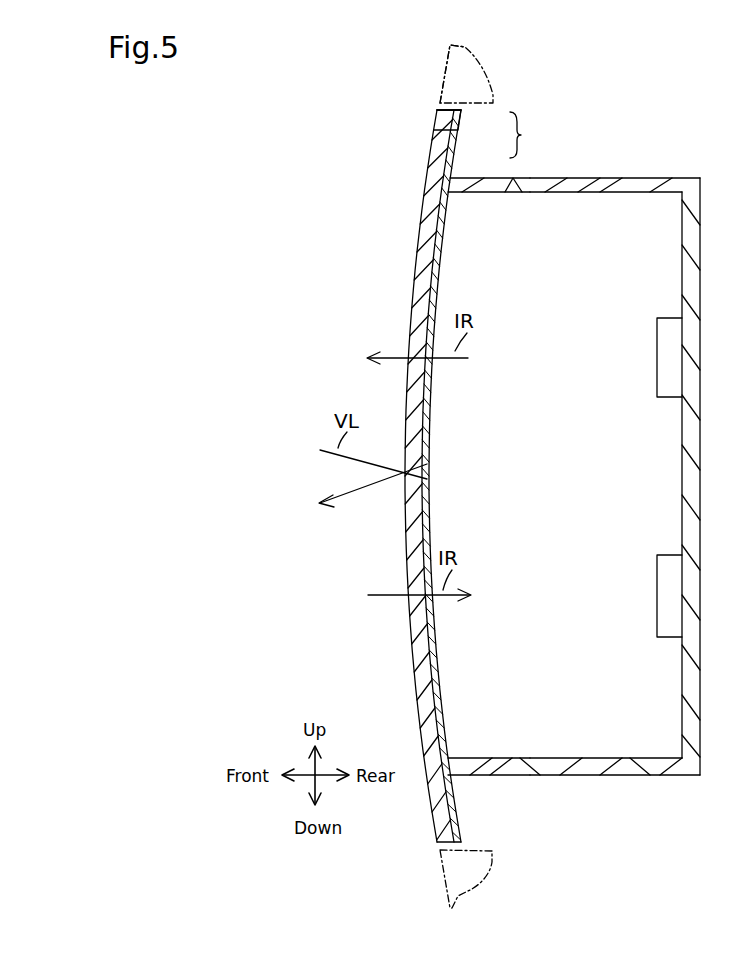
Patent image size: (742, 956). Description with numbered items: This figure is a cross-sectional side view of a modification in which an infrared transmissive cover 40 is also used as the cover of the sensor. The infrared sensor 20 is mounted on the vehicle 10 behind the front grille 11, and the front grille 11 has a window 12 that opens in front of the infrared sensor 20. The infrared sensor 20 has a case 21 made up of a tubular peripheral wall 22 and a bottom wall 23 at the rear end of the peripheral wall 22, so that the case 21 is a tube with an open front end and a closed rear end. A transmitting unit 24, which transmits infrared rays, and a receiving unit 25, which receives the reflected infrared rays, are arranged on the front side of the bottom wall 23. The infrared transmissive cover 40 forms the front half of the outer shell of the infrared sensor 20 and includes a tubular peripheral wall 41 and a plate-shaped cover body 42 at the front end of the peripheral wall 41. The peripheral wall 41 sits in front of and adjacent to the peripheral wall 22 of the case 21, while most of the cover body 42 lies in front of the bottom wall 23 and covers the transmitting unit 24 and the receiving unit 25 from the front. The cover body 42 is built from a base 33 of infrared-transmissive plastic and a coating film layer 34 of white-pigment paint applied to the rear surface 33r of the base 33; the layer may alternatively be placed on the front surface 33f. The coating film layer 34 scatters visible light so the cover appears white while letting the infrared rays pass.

The vehicle 10 is at (573, 104).
The front grille 11 is at (448, 52).
The window 12 is at (437, 118).
The infrared sensor 20 is at (628, 484).
The case 21 is at (628, 438).
The peripheral wall 22 is at (645, 185).
The bottom wall 23 is at (701, 457).
The transmitting unit 24 is at (657, 352).
The receiving unit 25 is at (657, 588).
The base 33 is at (418, 476).
The front surface 33f is at (413, 293).
The rear surface 33r is at (432, 291).
The coating film layer 34 is at (432, 422).
The infrared transmissive cover 40 is at (491, 465).
The peripheral wall 41 is at (497, 186).
The cover body 42 is at (456, 118).